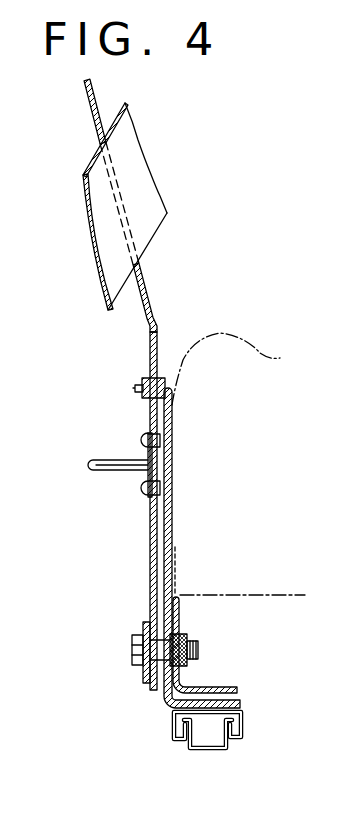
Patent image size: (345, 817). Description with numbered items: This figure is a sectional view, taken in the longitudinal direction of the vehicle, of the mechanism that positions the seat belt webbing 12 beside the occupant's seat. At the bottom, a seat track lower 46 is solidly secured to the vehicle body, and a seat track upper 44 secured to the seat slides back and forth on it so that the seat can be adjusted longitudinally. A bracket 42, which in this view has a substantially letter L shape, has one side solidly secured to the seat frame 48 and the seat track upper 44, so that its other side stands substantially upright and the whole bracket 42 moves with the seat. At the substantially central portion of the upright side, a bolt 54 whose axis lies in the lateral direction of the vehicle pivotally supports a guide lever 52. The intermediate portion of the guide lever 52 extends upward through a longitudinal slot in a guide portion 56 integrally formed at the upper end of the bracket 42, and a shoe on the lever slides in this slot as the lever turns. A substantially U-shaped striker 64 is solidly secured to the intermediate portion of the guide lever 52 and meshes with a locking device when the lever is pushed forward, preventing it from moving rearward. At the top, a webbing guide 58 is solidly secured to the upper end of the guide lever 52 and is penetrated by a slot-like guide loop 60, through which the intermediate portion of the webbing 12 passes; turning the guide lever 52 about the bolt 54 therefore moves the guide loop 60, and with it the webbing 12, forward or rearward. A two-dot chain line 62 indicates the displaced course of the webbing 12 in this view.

The webbing 12 is at (113, 292).
The bracket 42 is at (175, 543).
The seat track upper 44 is at (172, 720).
The seat track lower 46 is at (190, 747).
The seat frame 48 is at (186, 678).
The guide lever 52 is at (152, 570).
The bolt 54 is at (132, 652).
The guide portion 56 is at (136, 389).
The webbing guide 58 is at (154, 320).
The guide loop 60 is at (150, 288).
The phantom line of belt path 62 is at (160, 376).
The striker 64 is at (107, 470).